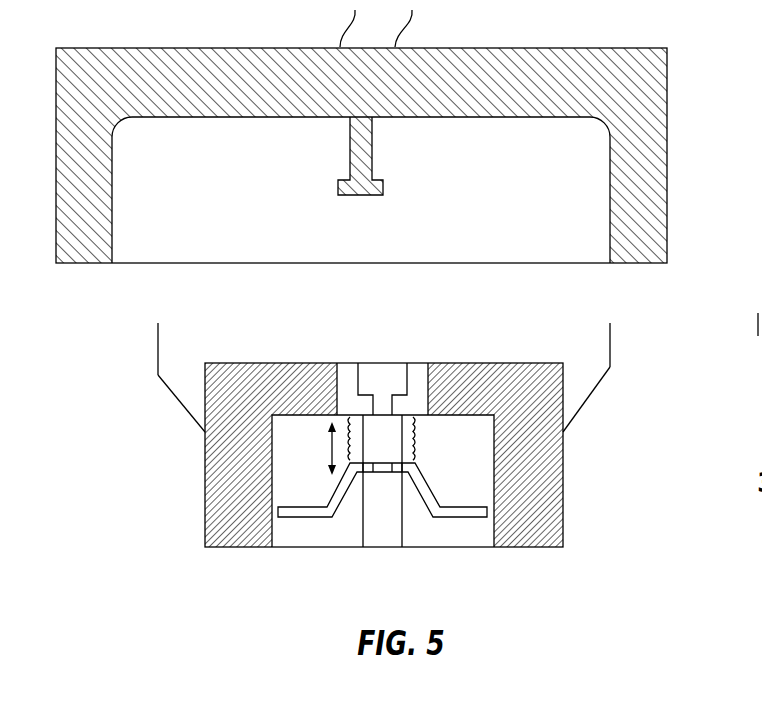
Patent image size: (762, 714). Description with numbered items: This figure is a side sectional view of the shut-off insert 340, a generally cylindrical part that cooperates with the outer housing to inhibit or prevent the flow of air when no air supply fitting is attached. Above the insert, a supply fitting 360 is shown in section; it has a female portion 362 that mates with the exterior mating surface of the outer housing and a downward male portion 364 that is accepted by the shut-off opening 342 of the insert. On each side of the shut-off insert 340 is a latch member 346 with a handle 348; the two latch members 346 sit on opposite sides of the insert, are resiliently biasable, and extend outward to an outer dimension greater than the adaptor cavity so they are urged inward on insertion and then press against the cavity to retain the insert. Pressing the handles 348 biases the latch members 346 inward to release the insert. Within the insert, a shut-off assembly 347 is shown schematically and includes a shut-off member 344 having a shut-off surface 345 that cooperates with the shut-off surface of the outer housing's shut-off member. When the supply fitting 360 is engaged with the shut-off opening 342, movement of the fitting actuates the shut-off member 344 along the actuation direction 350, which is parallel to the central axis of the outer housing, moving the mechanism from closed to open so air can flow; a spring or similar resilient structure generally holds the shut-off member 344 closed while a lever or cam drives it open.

The shut-off insert 340 is at (205, 520).
The shut-off opening 342 is at (385, 382).
The shut-off member 344 is at (477, 507).
The shut-off surface 345 is at (432, 512).
The latch member 346 is at (172, 397).
The shut-off assembly 347 is at (448, 438).
The handle 348 is at (168, 362).
The actuation direction 350 is at (310, 448).
The supply fitting 360 is at (667, 150).
The female portion 362 is at (610, 225).
The male portion 364 is at (385, 185).